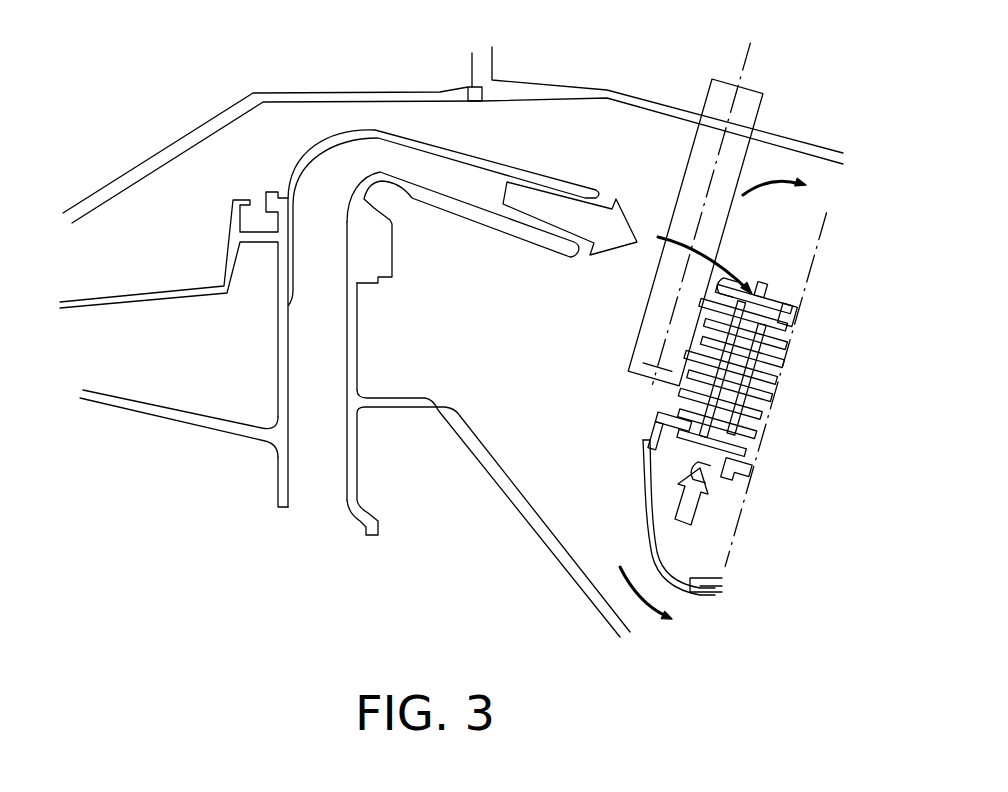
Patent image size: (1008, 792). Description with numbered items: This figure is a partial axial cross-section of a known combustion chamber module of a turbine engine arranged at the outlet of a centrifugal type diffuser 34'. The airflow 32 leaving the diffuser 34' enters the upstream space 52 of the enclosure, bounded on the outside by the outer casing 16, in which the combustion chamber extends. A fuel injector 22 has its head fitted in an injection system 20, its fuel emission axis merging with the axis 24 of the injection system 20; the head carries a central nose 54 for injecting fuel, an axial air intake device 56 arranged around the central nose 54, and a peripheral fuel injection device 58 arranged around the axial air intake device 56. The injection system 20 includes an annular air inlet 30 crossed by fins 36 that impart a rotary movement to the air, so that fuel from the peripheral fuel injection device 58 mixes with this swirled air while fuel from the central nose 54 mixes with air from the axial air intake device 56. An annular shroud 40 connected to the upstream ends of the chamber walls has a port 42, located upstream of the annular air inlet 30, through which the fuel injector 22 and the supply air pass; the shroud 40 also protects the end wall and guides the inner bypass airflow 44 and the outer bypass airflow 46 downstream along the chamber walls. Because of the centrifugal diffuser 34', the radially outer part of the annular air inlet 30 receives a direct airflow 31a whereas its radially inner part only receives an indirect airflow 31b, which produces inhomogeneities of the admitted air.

The outer casing 16 is at (641, 95).
The fuel injector 22 is at (745, 161).
The outer bypass airflow 46 is at (776, 177).
The centrifugal type diffuser 34' is at (443, 312).
The upstream space 52 is at (623, 280).
The airflow 32 is at (557, 230).
The direct airflow 31a is at (750, 280).
The injection system 20 is at (784, 305).
The fins 36 is at (792, 339).
The axial air intake device 56 is at (786, 360).
The central nose 54 is at (774, 378).
The axis of the injection system 24 is at (776, 392).
The port 42 is at (652, 422).
The peripheral fuel injection device 58 is at (745, 452).
The annular air inlet 30 is at (712, 482).
The indirect airflow 31b is at (690, 515).
The annular shroud 40 is at (641, 537).
The inner bypass airflow 44 is at (645, 605).